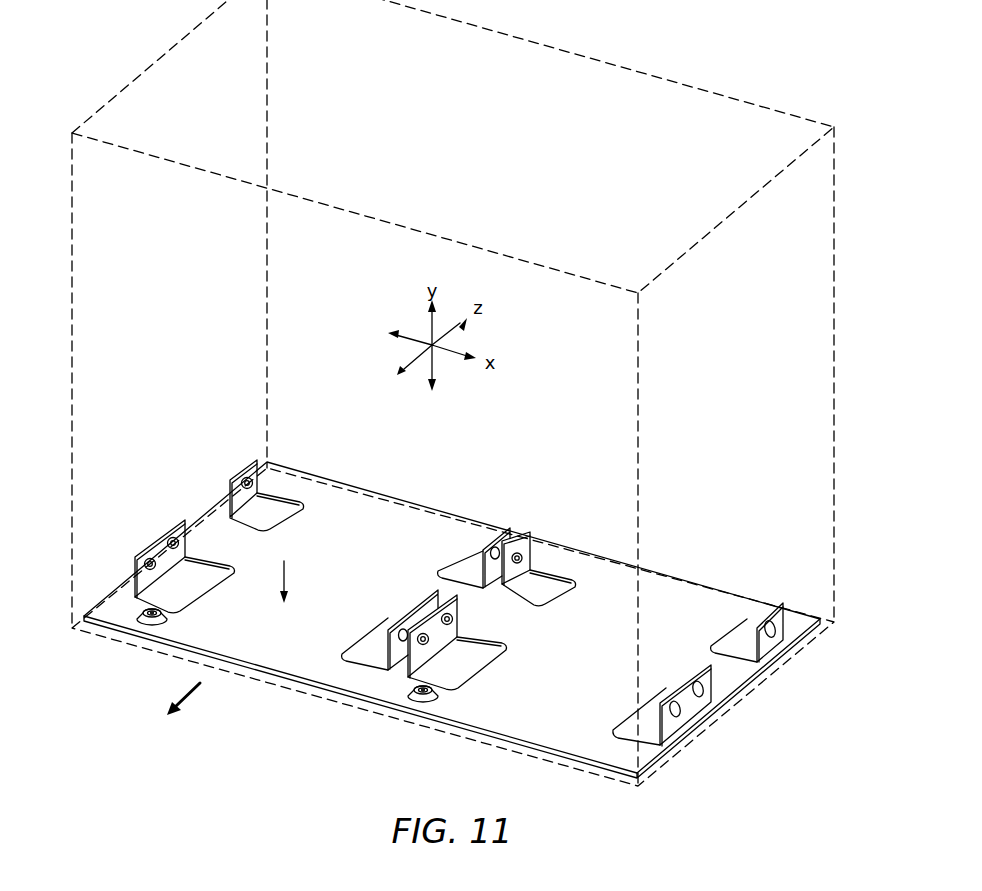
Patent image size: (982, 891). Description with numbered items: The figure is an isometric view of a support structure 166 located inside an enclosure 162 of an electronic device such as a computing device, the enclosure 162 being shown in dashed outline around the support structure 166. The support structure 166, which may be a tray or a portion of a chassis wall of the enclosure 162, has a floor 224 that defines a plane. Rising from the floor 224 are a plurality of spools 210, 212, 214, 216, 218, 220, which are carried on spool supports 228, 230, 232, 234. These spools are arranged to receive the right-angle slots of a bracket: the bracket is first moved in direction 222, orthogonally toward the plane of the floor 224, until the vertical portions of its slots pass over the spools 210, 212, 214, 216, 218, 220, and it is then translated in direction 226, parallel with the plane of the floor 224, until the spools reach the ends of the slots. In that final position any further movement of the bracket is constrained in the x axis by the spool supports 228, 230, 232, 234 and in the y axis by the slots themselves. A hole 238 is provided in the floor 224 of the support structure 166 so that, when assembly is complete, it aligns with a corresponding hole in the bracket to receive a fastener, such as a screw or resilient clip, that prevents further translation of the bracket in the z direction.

The enclosure 162 is at (591, 57).
The support structure 166 is at (452, 618).
The spool 210 is at (408, 622).
The spool 212 is at (418, 610).
The spool 214 is at (481, 555).
The spool 216 is at (154, 567).
The spool 218 is at (182, 546).
The spool 220 is at (237, 477).
The direction 222 is at (285, 568).
The floor 224 is at (480, 735).
The direction 226 is at (190, 697).
The spool support 228 is at (431, 597).
The spool support 230 is at (493, 545).
The spool support 232 is at (183, 563).
The spool support 234 is at (229, 489).
The hole 238 is at (145, 628).